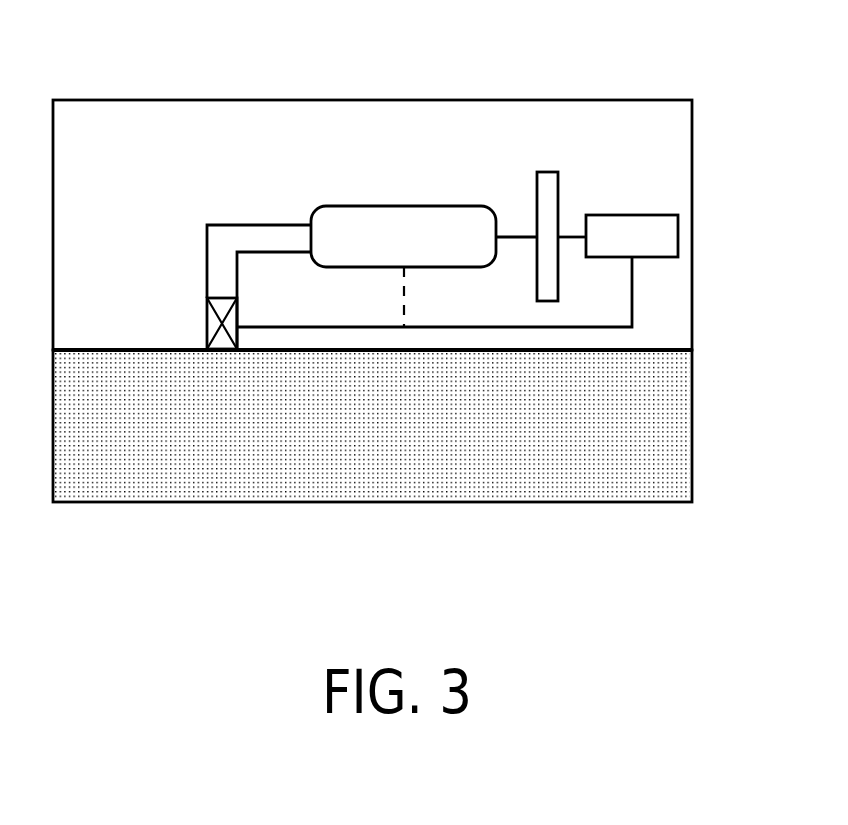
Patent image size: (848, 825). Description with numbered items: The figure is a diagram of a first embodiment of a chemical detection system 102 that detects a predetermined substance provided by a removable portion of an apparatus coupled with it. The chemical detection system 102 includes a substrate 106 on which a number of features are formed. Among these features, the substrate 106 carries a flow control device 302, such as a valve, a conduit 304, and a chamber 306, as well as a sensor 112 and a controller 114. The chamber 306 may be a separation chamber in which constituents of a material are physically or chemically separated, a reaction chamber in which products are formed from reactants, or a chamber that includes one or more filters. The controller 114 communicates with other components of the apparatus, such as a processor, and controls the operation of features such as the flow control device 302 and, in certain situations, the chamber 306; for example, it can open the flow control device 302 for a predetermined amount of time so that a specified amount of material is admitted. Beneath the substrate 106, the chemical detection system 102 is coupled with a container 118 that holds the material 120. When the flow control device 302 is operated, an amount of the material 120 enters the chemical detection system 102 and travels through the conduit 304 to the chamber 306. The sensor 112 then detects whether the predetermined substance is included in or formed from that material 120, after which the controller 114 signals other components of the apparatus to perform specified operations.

The chemical detection system 102 is at (221, 70).
The substrate 106 is at (692, 170).
The sensor 112 is at (547, 172).
The controller 114 is at (653, 257).
The container 118 is at (692, 428).
The material 120 is at (442, 471).
The flow control device 302 is at (207, 349).
The conduit 304 is at (245, 225).
The chamber 306 is at (404, 206).